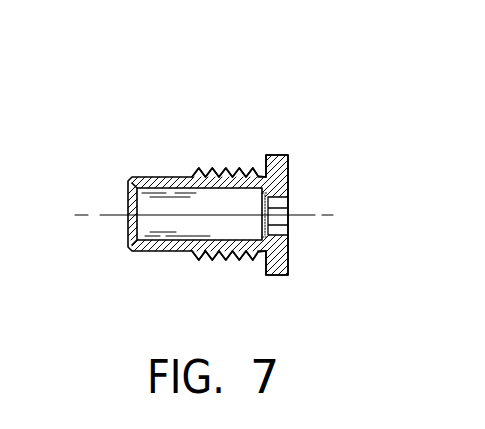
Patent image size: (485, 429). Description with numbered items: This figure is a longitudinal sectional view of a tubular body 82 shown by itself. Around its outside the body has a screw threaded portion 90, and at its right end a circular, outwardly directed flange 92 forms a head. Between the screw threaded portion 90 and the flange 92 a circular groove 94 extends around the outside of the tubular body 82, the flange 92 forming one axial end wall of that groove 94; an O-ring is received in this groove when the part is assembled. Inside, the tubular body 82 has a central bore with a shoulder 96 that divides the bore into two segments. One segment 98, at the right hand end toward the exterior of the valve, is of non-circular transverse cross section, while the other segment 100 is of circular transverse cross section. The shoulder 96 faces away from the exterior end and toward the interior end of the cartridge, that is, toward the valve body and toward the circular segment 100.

The tubular body 82 is at (283, 277).
The screw threaded portion 90 is at (222, 168).
The flange 92 is at (288, 163).
The groove 94 is at (253, 176).
The shoulder 96 is at (288, 218).
The segment 98 is at (288, 211).
The segment 100 is at (165, 204).